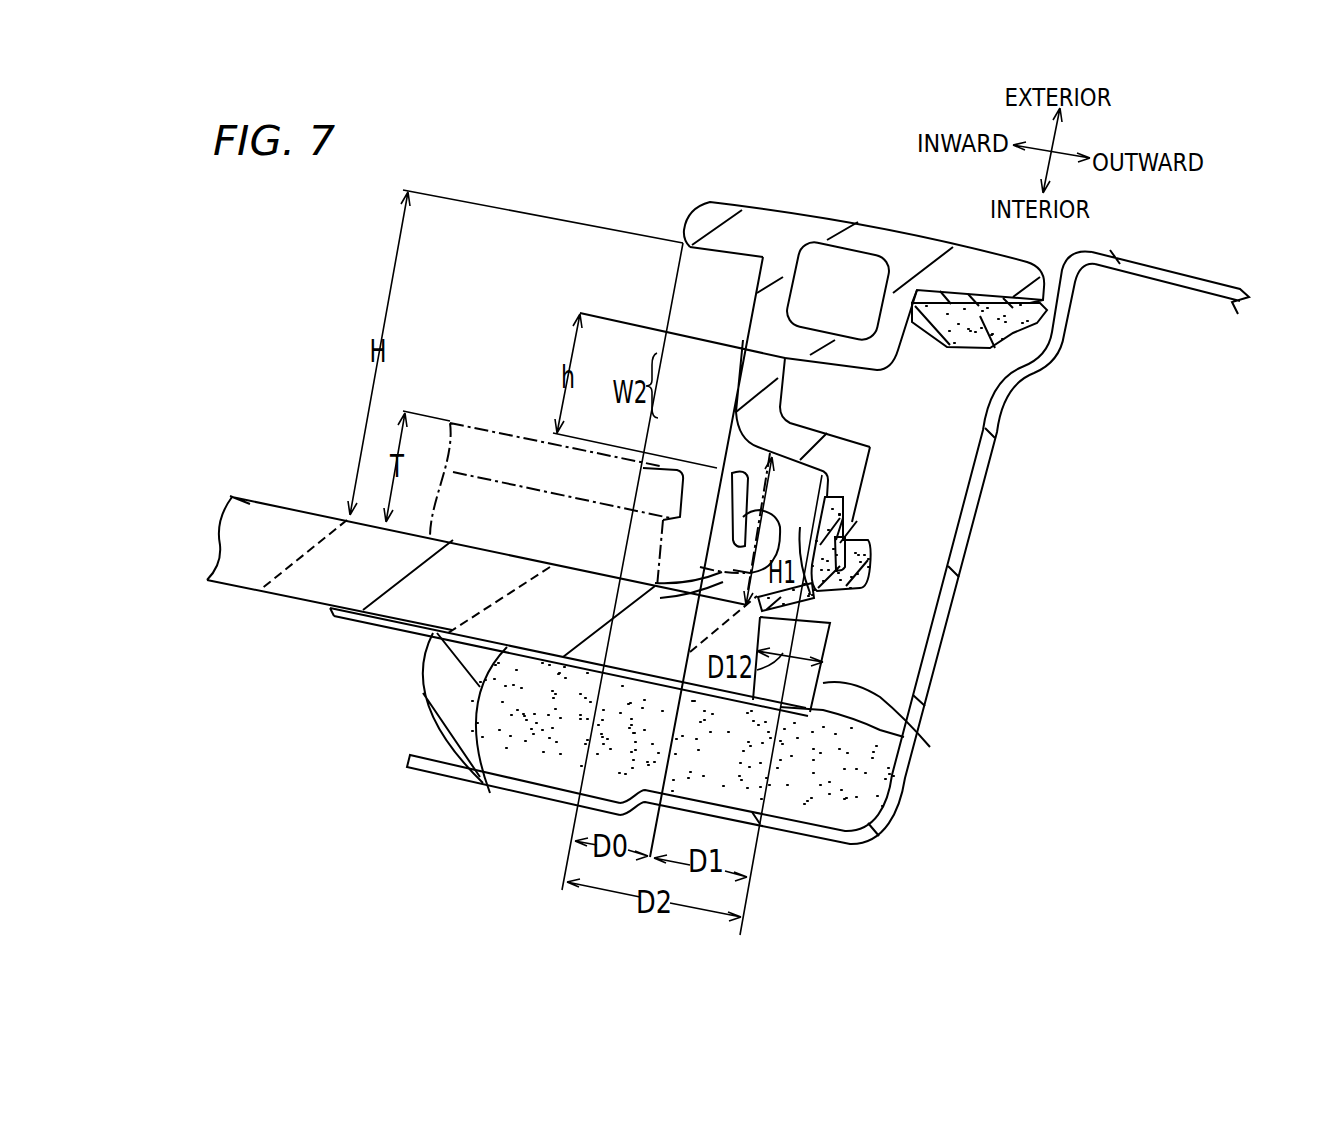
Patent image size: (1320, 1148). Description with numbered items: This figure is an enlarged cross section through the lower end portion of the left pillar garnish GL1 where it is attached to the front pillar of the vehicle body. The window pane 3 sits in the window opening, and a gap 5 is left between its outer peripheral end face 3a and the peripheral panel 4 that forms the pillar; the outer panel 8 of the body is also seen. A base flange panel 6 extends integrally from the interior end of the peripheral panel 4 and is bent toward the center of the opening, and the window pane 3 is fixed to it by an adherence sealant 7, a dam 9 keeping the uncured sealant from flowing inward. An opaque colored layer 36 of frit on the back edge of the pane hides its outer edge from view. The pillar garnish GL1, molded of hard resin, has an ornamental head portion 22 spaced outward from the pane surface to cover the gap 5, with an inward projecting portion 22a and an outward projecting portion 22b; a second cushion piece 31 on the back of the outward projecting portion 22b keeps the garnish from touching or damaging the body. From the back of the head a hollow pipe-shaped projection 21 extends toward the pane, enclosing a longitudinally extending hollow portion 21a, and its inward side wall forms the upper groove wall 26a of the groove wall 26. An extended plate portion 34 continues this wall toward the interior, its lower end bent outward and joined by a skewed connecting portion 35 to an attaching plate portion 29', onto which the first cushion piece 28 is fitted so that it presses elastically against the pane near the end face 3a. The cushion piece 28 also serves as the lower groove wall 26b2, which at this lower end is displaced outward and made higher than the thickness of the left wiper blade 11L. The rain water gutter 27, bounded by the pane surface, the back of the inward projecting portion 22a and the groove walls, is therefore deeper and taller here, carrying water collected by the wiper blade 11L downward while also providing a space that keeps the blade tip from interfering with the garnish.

The window pane 3 is at (243, 580).
The outer peripheral end face 3a is at (930, 747).
The peripheral panel 4 is at (977, 510).
The gap 5 is at (880, 675).
The base flange panel 6 is at (540, 790).
The adherence sealant 7 is at (520, 743).
The outer panel 8 is at (1190, 290).
The dam 9 is at (427, 679).
The wiper blade on the left side 11L is at (510, 430).
The projection 21 is at (891, 388).
The hollow portion 21a is at (858, 309).
The ornamental head portion 22 is at (875, 205).
The inward projecting portion 22a is at (717, 223).
The outward projecting portion 22b is at (1020, 273).
The groove wall 26 is at (745, 306).
The upper groove wall 26a is at (742, 368).
The lower groove wall of the second groove wall 26b2 is at (812, 503).
The rain water gutter 27 is at (841, 594).
The first cushion piece 28 is at (860, 570).
The attaching plate portion 29' is at (878, 544).
The second cushion piece 31 is at (957, 347).
The extended plate portion 34 is at (783, 375).
The connecting portion 35 is at (823, 428).
The opaque colored layer 36 is at (337, 613).
The pillar garnish on the left side GL1 is at (815, 197).